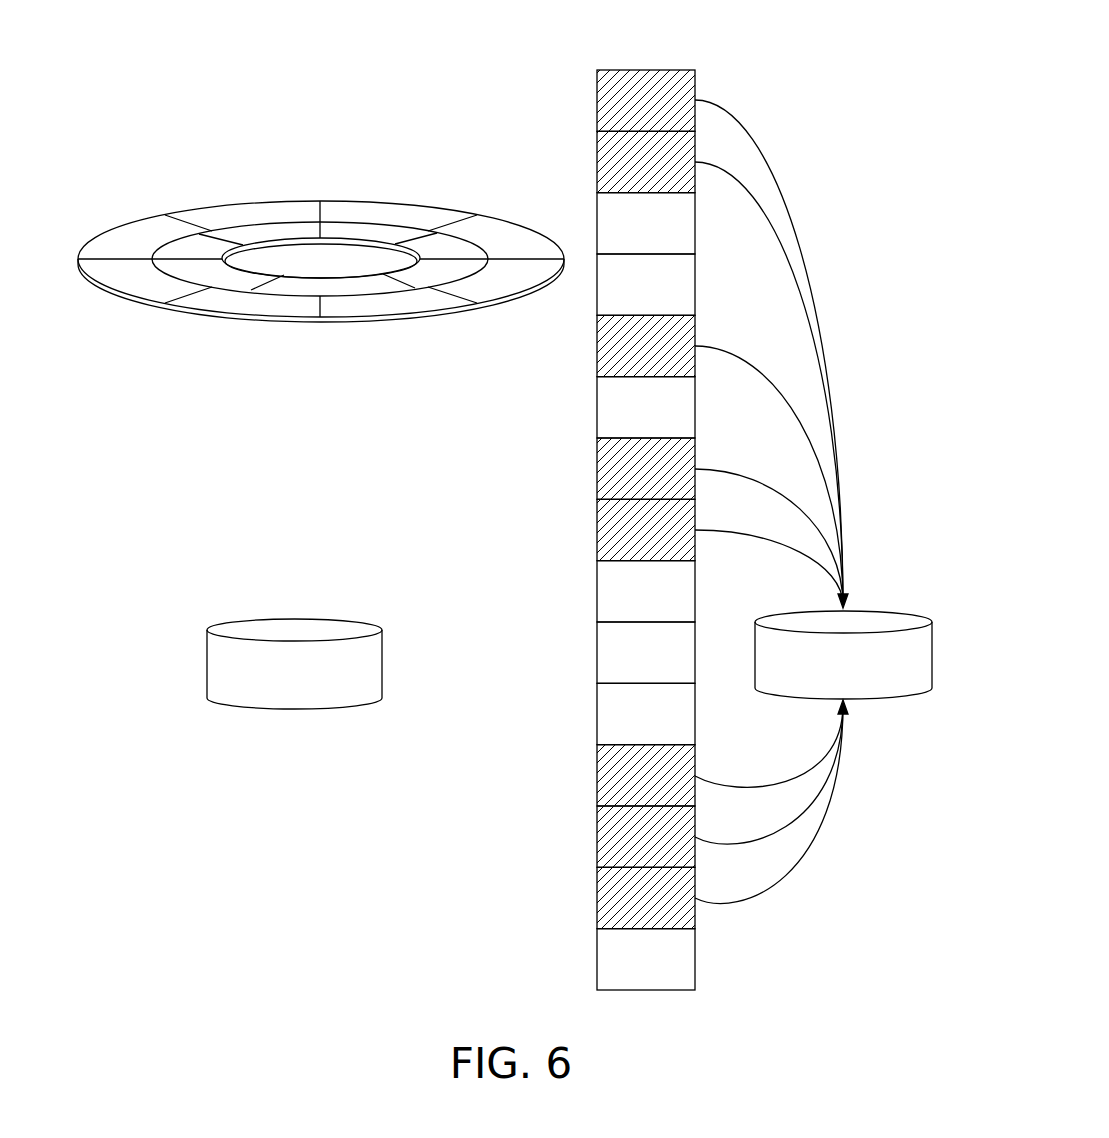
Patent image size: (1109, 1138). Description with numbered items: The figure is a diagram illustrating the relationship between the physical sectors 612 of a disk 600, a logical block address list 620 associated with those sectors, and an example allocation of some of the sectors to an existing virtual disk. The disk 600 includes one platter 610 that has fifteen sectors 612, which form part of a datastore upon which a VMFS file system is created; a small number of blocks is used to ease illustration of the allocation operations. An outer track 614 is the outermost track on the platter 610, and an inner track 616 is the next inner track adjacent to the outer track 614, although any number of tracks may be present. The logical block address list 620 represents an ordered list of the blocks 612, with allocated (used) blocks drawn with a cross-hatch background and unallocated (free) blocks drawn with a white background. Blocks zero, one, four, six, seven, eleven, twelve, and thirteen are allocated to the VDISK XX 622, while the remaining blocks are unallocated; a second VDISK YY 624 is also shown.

The disk 600 is at (319, 306).
The platter 610 is at (103, 290).
The physical sectors 612 is at (153, 223).
The outer track 614 is at (518, 275).
The inner track 616 is at (456, 276).
The logical block address list 620 is at (672, 58).
The VDISK XX 622 is at (853, 610).
The VDISK YY 624 is at (357, 623).